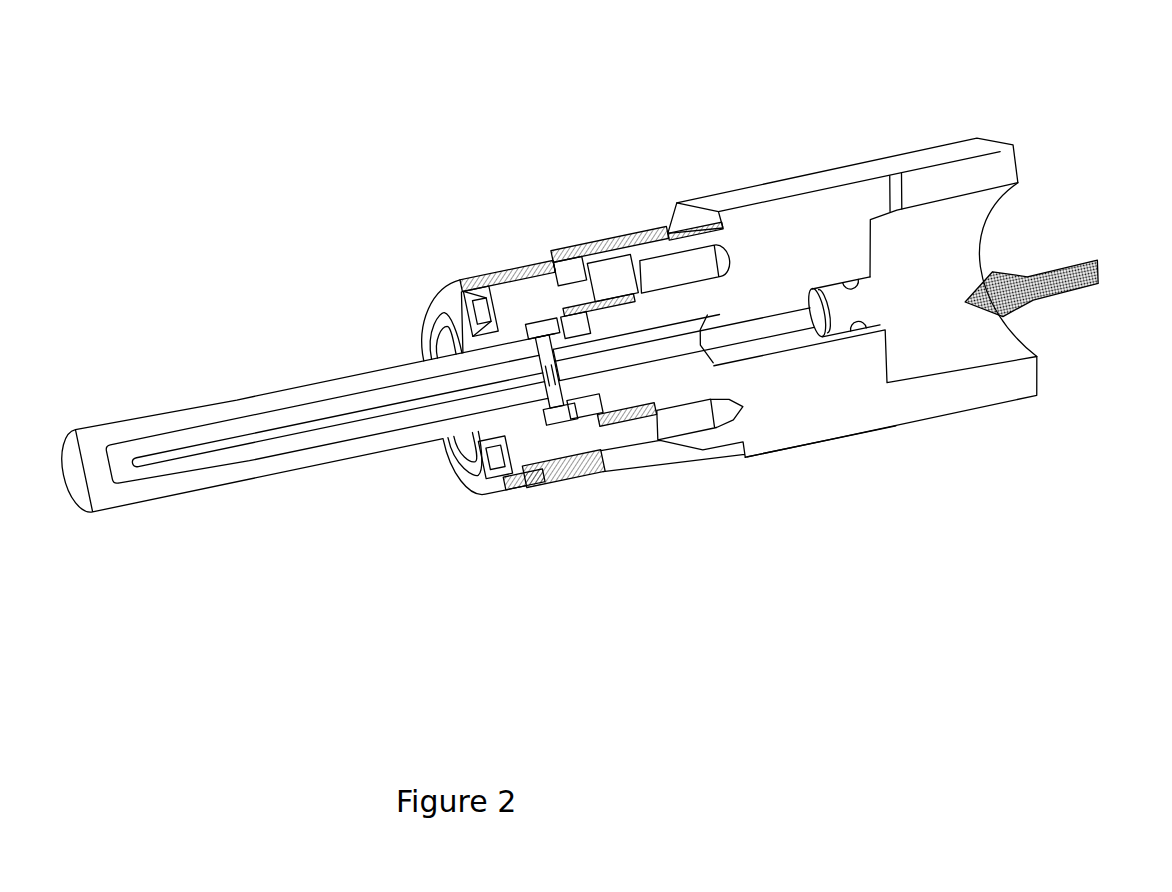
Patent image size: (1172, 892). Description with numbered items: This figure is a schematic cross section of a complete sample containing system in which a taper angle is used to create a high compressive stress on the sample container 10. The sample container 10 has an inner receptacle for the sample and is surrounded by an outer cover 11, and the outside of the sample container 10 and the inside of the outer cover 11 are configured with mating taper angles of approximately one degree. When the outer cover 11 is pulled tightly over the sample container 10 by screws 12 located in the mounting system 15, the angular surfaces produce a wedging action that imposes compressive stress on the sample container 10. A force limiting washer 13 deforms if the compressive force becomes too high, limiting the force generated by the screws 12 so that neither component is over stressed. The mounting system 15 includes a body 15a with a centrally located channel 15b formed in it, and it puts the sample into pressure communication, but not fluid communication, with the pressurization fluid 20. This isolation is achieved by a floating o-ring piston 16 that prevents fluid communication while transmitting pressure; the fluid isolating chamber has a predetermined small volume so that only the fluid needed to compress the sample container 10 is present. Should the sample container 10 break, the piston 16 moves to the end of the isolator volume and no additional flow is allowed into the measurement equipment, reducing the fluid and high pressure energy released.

The sample container 10 is at (327, 442).
The outer cover 11 is at (202, 497).
The screws 12 is at (550, 465).
The force limiting washer 13 is at (460, 302).
The mounting system 15 is at (747, 180).
The body 15a is at (797, 417).
The centrally located channel 15b is at (660, 337).
The floating o-ring piston 16 is at (828, 315).
The pressurization fluid 20 is at (1080, 305).